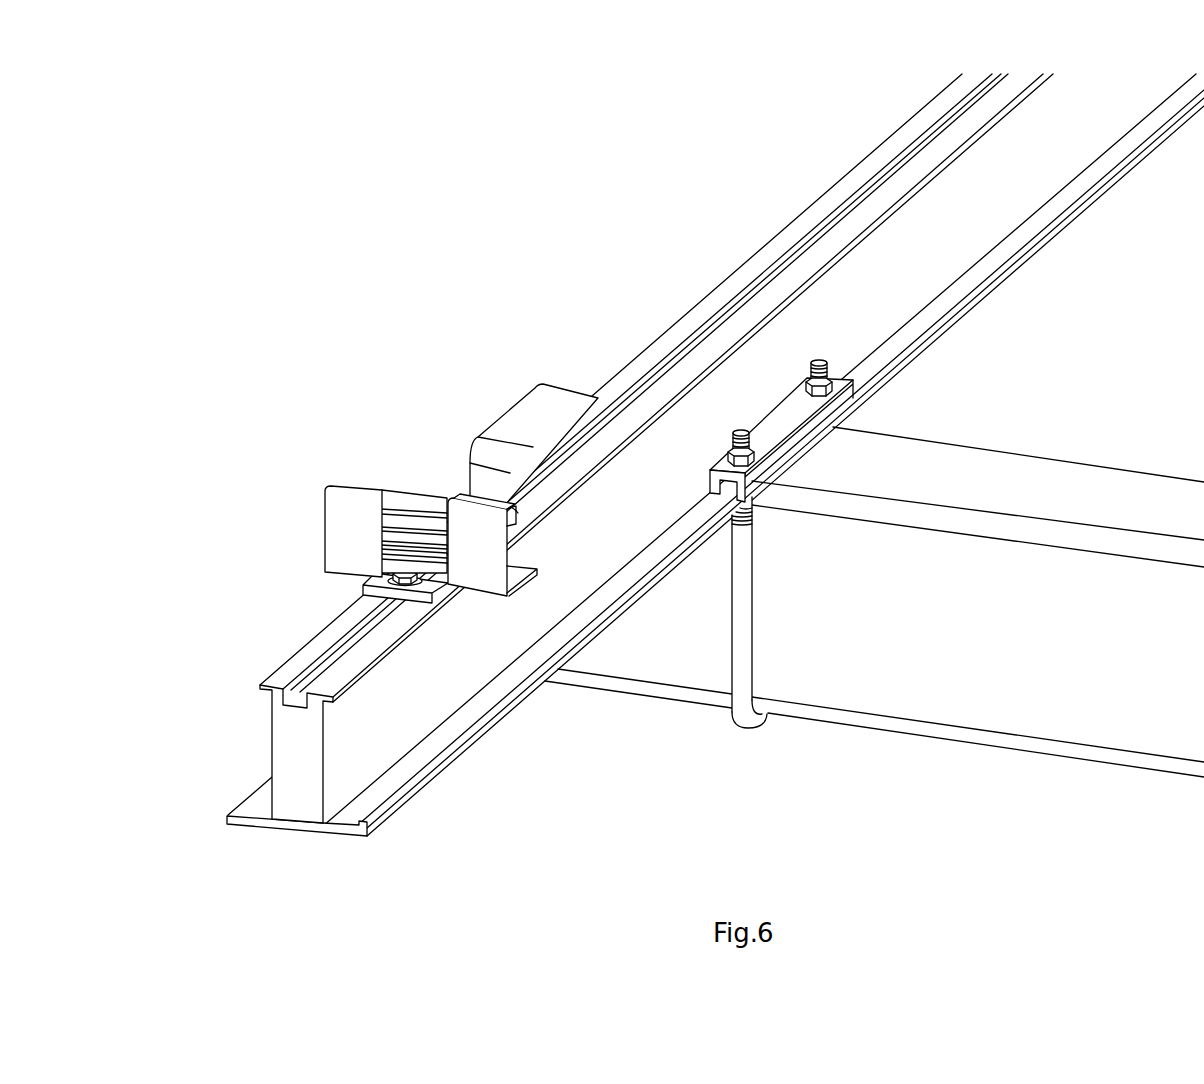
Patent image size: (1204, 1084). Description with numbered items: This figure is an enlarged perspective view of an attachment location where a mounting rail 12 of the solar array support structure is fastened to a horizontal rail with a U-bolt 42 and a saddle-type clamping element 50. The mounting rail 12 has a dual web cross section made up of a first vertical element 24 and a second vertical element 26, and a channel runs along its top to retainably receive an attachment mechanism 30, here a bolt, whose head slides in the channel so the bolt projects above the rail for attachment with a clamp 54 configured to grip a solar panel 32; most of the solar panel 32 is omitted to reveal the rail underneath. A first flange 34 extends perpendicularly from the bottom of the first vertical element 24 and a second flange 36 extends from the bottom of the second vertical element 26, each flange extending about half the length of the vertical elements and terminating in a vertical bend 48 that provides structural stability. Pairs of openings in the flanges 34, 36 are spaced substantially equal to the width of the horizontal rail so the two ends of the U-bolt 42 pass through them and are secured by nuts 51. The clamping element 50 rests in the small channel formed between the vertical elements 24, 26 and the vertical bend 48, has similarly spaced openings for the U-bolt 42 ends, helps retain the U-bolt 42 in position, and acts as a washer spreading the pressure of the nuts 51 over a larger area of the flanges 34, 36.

The mounting rail 12 is at (710, 263).
The first vertical element 24 is at (370, 740).
The second vertical element 26 is at (283, 738).
The attachment mechanism 30 is at (378, 512).
The solar panel 32 is at (347, 533).
The first flange 34 is at (583, 611).
The second flange 36 is at (245, 812).
The U-bolt 42 is at (743, 635).
The vertical bend 48 is at (255, 788).
The clamping element 50 is at (788, 416).
The nut 51 is at (745, 458).
The clamp 54 is at (415, 507).